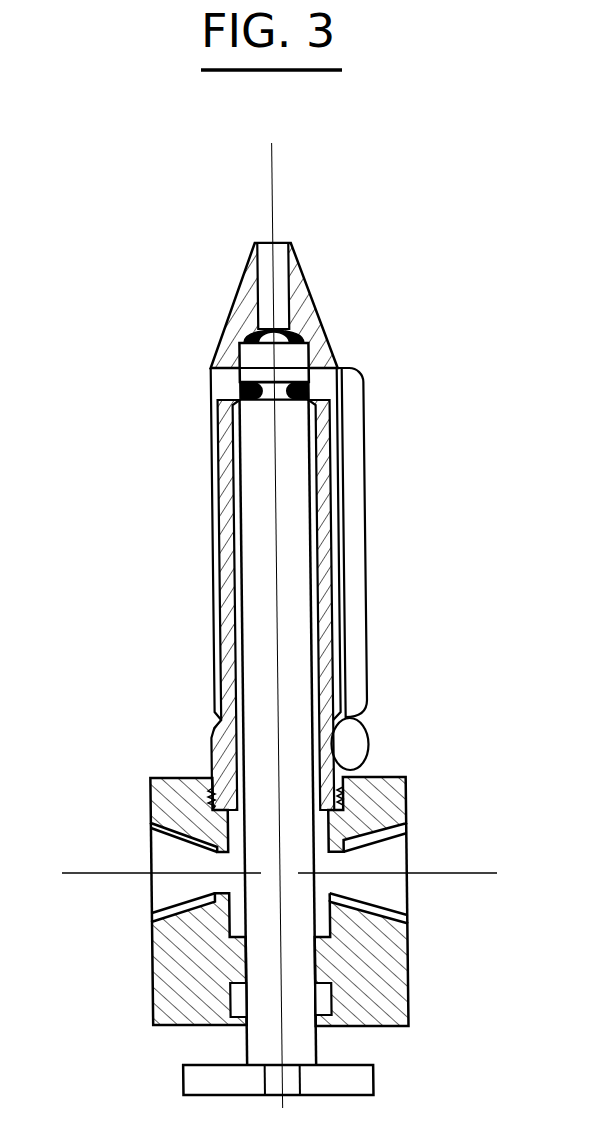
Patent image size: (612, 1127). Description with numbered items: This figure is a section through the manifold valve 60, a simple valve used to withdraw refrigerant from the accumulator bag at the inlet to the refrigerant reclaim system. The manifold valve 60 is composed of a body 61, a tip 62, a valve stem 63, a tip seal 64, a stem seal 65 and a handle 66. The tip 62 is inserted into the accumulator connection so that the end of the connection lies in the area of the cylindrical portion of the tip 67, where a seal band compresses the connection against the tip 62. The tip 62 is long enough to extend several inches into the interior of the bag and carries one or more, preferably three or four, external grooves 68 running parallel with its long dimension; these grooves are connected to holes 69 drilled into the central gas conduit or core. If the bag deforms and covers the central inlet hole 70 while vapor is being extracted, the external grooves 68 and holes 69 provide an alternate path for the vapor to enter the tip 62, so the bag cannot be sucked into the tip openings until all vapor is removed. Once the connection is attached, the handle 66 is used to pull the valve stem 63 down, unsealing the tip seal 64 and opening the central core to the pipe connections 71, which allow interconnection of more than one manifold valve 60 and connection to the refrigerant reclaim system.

The manifold valve 60 is at (155, 586).
The body 61 is at (407, 797).
The tip 62 is at (310, 289).
The valve stem 63 is at (278, 703).
The tip seal 64 is at (239, 391).
The stem seal 65 is at (204, 1031).
The handle 66 is at (375, 1078).
The cylindrical portion of the tip 67 is at (369, 743).
The external grooves 68 is at (365, 560).
The holes 69 is at (211, 368).
The central inlet hole 70 is at (307, 268).
The pipe connections 71 is at (282, 873).